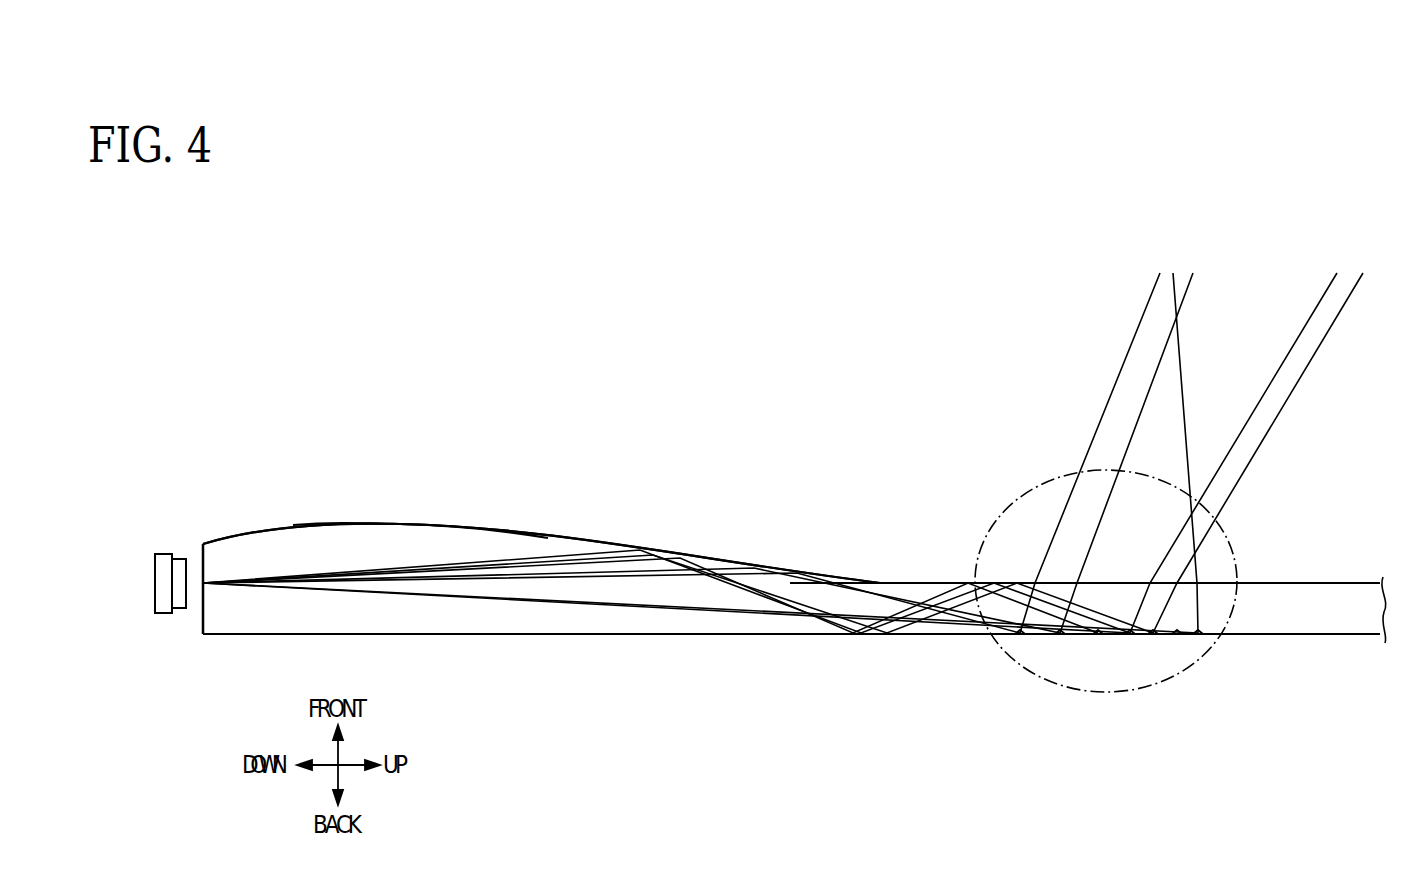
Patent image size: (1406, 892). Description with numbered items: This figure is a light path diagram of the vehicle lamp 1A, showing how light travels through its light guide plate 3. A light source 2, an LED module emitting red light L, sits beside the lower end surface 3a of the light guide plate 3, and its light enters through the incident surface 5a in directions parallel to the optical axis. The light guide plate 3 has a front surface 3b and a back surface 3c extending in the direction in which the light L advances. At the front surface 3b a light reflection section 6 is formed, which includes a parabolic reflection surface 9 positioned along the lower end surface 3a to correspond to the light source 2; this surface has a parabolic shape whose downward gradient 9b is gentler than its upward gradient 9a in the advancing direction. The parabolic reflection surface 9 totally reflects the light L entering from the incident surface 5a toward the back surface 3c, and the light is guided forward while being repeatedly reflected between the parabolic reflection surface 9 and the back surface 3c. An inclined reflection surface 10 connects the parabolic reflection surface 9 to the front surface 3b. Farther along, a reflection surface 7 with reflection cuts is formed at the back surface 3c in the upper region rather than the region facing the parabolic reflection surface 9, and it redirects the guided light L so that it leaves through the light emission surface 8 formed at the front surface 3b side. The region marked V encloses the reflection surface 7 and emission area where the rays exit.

The vehicle lamp 1A is at (286, 432).
The light source 2 is at (153, 583).
The light guide plate 3 is at (795, 636).
The lower end surface 3a is at (203, 622).
The front surface 3b is at (1315, 583).
The back surface 3c is at (1322, 635).
The incident surface 5a is at (203, 565).
The light reflection section 6 is at (575, 511).
The reflection surface 7 is at (1050, 634).
The light emission surface 8 is at (1110, 583).
The parabolic reflection surface 9 is at (515, 455).
The upward gradient 9a is at (293, 523).
The downward gradient 9b is at (548, 538).
The inclined reflection surface 10 is at (795, 577).
The light L is at (1267, 430).
The enlarged region V is at (1140, 692).